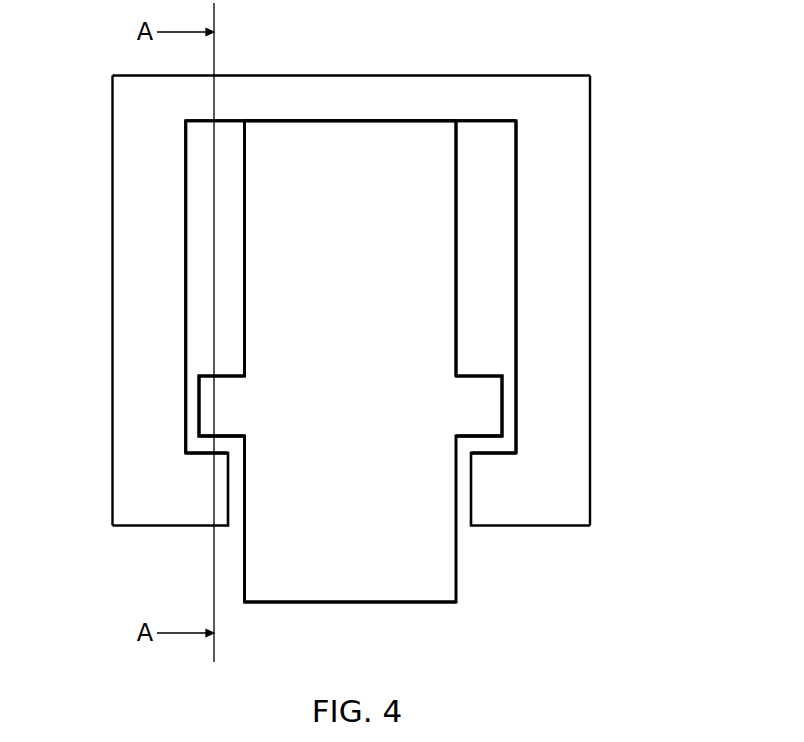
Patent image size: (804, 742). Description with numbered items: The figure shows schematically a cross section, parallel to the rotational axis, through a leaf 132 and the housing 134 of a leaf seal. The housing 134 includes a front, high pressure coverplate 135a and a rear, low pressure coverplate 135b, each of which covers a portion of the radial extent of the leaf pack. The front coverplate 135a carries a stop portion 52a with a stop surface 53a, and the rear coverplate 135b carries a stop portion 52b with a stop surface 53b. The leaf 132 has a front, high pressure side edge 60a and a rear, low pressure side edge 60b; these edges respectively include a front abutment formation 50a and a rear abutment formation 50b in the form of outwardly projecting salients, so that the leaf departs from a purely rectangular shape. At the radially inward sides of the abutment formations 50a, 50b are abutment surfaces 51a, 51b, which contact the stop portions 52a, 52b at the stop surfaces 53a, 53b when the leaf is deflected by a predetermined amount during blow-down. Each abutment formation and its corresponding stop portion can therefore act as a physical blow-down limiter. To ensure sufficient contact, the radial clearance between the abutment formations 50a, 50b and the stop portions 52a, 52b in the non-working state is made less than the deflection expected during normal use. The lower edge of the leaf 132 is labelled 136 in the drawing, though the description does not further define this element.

The leaf 132 is at (326, 538).
The housing 134 is at (374, 110).
The bottom edge 136 is at (355, 604).
The front abutment formation 50a is at (272, 422).
The rear abutment formation 50b is at (486, 422).
The abutment surface 51a is at (222, 434).
The abutment surface 51b is at (482, 432).
The stop portion 52a is at (197, 516).
The stop portion 52b is at (554, 517).
The stop surface 53a is at (205, 455).
The stop surface 53b is at (492, 455).
The front side edge 60a is at (244, 226).
The rear side edge 60b is at (456, 252).
The front coverplate 135a is at (112, 121).
The rear coverplate 135b is at (590, 120).